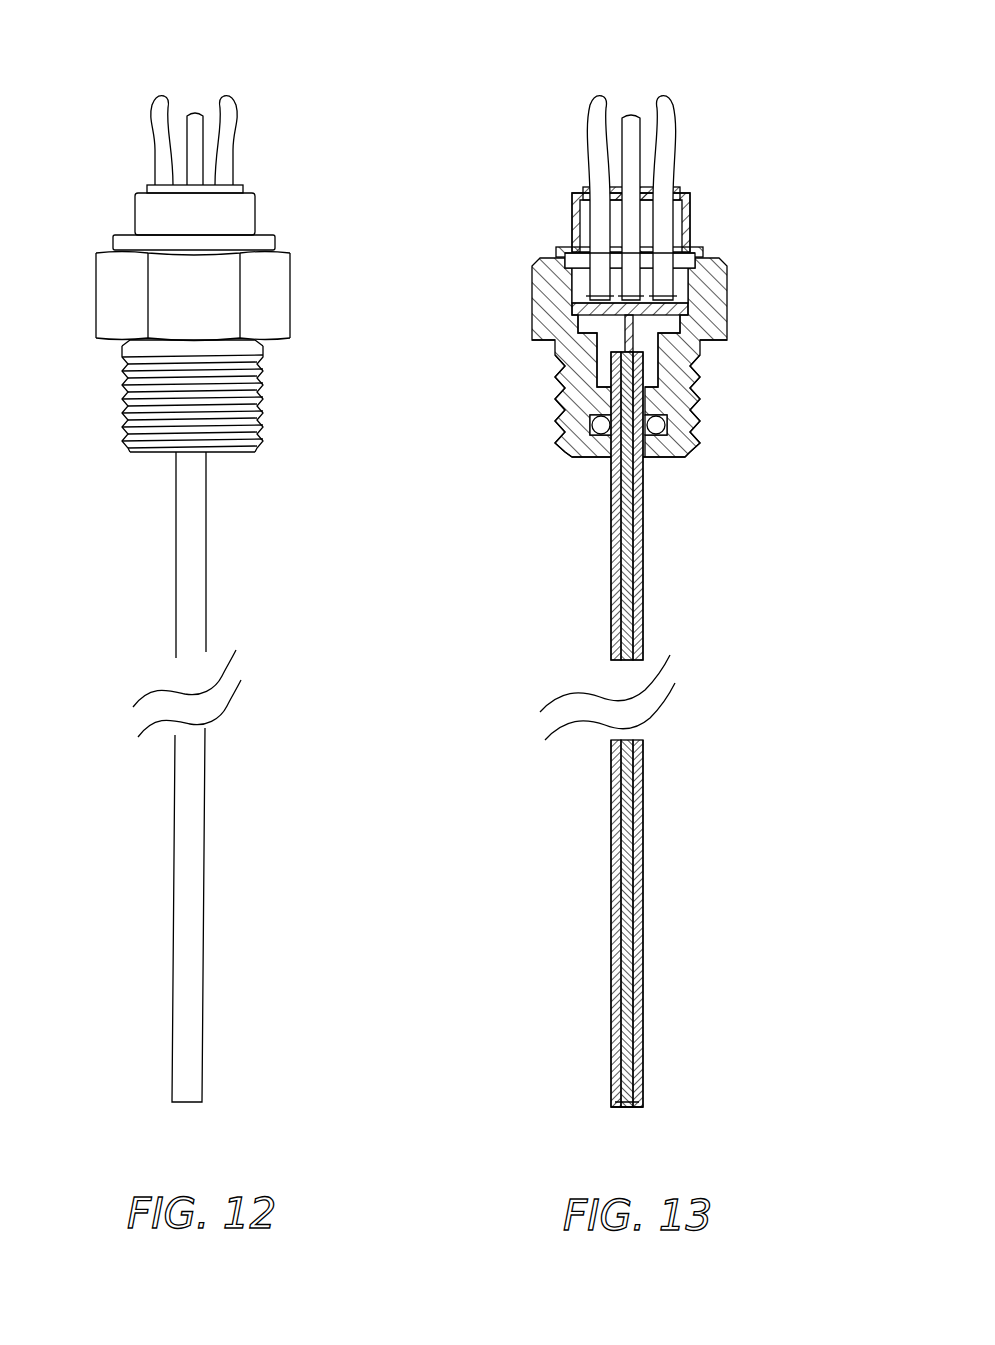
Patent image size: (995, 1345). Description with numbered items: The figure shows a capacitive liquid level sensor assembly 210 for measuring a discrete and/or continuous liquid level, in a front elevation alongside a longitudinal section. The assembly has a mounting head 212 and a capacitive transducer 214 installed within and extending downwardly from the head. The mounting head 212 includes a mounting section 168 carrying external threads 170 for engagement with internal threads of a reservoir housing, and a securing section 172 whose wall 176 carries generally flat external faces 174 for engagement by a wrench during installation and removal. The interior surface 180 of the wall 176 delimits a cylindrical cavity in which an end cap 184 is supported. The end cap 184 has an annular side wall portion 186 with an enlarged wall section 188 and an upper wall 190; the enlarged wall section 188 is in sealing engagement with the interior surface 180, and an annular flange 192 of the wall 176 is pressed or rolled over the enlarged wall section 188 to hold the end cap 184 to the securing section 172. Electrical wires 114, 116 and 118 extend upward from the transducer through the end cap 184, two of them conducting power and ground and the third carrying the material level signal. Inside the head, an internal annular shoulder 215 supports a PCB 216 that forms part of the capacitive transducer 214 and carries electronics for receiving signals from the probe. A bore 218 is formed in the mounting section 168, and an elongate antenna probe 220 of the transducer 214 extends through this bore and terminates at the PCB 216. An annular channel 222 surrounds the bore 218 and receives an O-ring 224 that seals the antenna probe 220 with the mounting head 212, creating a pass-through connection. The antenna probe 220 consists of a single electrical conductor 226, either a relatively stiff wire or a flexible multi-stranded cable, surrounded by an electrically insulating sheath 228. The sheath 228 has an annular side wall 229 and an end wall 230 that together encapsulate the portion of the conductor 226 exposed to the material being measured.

In FIG. 12, the electrical wire 114 is at (158, 96).
In FIG. 13, the electrical wire 114 is at (594, 98).
In FIG. 12, the electrical wire 116 is at (198, 111).
In FIG. 13, the electrical wire 116 is at (634, 114).
In FIG. 12, the electrical wire 118 is at (236, 96).
In FIG. 13, the electrical wire 118 is at (672, 98).
In FIG. 12, the mounting section 168 is at (264, 372).
In FIG. 13, the mounting section 168 is at (702, 368).
In FIG. 12, the external threads 170 is at (260, 426).
In FIG. 13, the external threads 170 is at (700, 424).
In FIG. 12, the securing section 172 is at (96, 264).
In FIG. 12, the external faces 174 is at (106, 320).
In FIG. 13, the wall 176 is at (540, 288).
In FIG. 13, the interior surface 180 is at (580, 288).
In FIG. 12, the end cap 184 is at (138, 215).
In FIG. 13, the end cap 184 is at (572, 214).
In FIG. 13, the annular side wall portion 186 is at (690, 216).
In FIG. 13, the enlarged wall section 188 is at (564, 262).
In FIG. 12, the upper wall 190 is at (148, 188).
In FIG. 13, the upper wall 190 is at (584, 190).
In FIG. 12, the annular flange 192 is at (268, 247).
In FIG. 13, the annular flange 192 is at (700, 251).
In FIG. 12, the capacitive liquid level sensor assembly 210 is at (305, 176).
In FIG. 13, the capacitive liquid level sensor assembly 210 is at (795, 118).
In FIG. 12, the mounting head 212 is at (293, 276).
In FIG. 13, the mounting head 212 is at (730, 314).
In FIG. 12, the capacitive transducer 214 is at (212, 572).
In FIG. 13, the capacitive transducer 214 is at (606, 632).
In FIG. 13, the internal annular shoulder 215 is at (698, 340).
In FIG. 13, the PCB 216 is at (576, 312).
In FIG. 13, the bore 218 is at (576, 421).
In FIG. 13, the antenna probe 220 is at (646, 560).
In FIG. 13, the annular channel 222 is at (656, 435).
In FIG. 13, the O-ring 224 is at (601, 434).
In FIG. 12, the electrical conductor 226 is at (206, 804).
In FIG. 13, the electrical conductor 226 is at (644, 896).
In FIG. 13, the electrically insulating sheath 228 is at (611, 985).
In FIG. 13, the annular side wall 229 is at (611, 812).
In FIG. 13, the end wall 230 is at (625, 1108).